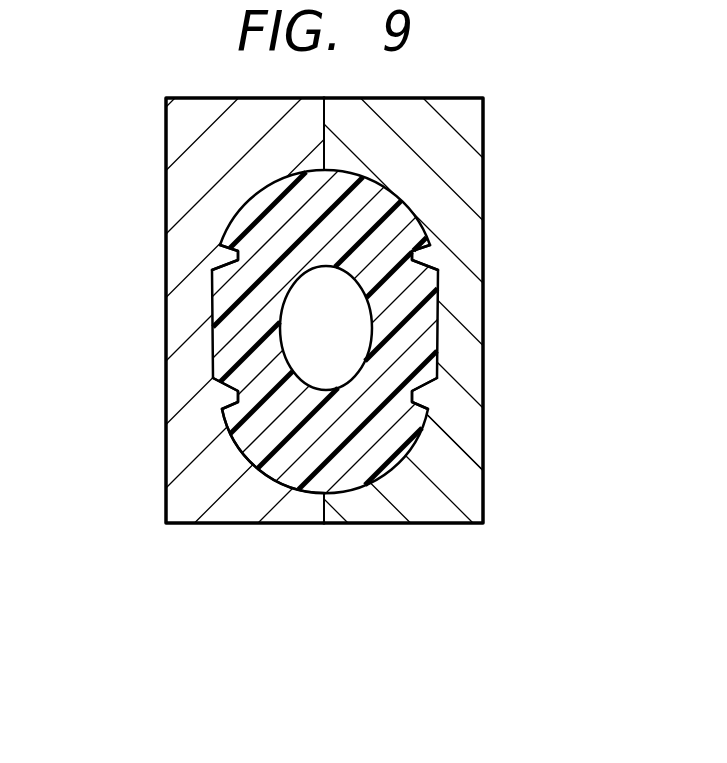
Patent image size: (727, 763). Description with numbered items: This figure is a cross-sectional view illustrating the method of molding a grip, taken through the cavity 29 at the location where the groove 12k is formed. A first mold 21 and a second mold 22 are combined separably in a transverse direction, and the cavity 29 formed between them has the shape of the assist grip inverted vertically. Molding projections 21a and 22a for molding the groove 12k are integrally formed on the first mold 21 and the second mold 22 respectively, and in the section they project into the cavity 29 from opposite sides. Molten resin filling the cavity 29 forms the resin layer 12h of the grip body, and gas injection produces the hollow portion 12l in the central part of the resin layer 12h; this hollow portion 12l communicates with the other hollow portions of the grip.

The first mold 21 is at (166, 142).
The second mold 22 is at (483, 122).
The molding projection 21a is at (232, 256).
The groove 12k is at (437, 259).
The cavity 29 is at (430, 337).
The molding projection 22a is at (440, 413).
The resin layer 12h is at (253, 453).
The hollow portion 12l is at (345, 338).